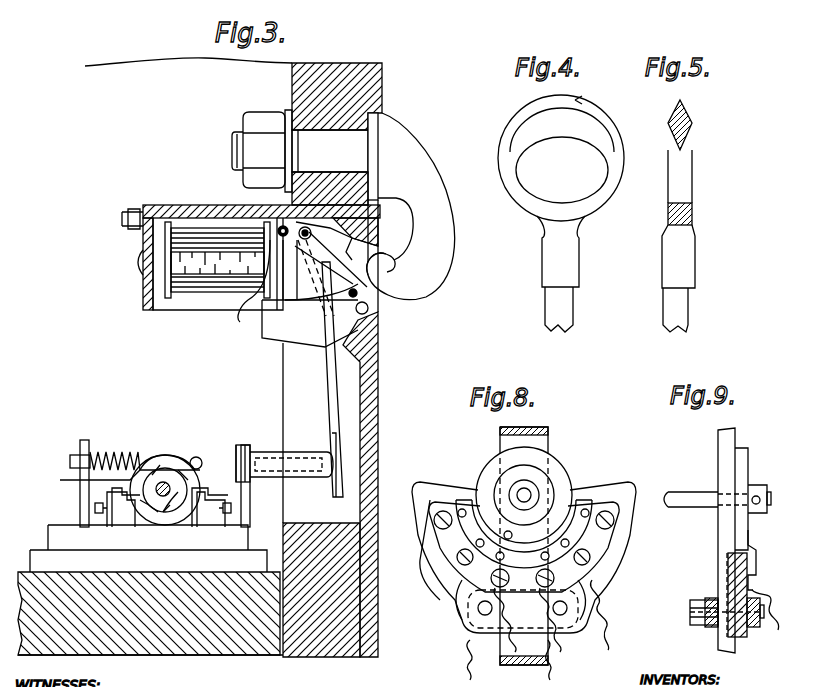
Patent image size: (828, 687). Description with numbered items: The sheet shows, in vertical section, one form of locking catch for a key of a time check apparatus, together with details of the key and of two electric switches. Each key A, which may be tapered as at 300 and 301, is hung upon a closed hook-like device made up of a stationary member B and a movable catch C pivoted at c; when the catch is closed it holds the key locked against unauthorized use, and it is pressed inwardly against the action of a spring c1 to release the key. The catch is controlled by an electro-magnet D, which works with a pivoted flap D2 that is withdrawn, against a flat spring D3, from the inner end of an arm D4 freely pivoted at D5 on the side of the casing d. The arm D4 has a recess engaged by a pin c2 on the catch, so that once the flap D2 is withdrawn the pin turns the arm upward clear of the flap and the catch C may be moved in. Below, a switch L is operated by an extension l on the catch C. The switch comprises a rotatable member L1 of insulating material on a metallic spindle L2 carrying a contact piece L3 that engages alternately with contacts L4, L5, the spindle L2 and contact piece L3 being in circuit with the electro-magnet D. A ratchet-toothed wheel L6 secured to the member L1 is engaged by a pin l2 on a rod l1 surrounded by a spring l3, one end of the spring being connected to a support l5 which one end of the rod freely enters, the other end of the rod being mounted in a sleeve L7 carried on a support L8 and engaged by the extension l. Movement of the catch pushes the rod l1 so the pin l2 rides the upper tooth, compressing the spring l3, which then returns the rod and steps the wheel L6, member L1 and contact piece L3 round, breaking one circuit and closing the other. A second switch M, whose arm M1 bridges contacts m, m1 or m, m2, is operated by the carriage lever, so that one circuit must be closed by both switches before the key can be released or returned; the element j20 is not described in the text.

In FIG. 3, the electro-magnet D is at (177, 222).
In FIG. 3, the pivot of the catch c is at (283, 210).
In FIG. 3, the spring c1 is at (313, 257).
In FIG. 3, the stationary member B is at (417, 206).
In FIG. 3, the pivot of the arm D5 is at (366, 276).
In FIG. 3, the movable catch C is at (372, 298).
In FIG. 3, the pin c2 is at (362, 316).
In FIG. 3, the arm D4 is at (316, 318).
In FIG. 3, the flat spring D3 is at (285, 296).
In FIG. 3, the pivoted flap D2 is at (280, 318).
In FIG. 3, the casing d is at (290, 336).
In FIG. 3, the extension l is at (335, 404).
In FIG. 3, the switch L is at (165, 472).
In FIG. 3, the rotatable member L1 is at (138, 503).
In FIG. 3, the metallic spindle L2 is at (163, 484).
In FIG. 3, the contact piece L3 is at (170, 508).
In FIG. 3, the contact L4 is at (121, 482).
In FIG. 3, the contact L5 is at (222, 488).
In FIG. 3, the ratchet-toothed wheel L6 is at (213, 470).
In FIG. 3, the sleeve L7 is at (297, 452).
In FIG. 3, the support L8 is at (247, 447).
In FIG. 3, the rod l1 is at (198, 490).
In FIG. 3, the pin l2 is at (193, 458).
In FIG. 3, the spring l3 is at (104, 452).
In FIG. 3, the support l5 is at (86, 444).
In FIG. 4, the key A is at (561, 213).
In FIG. 5, the key A is at (685, 241).
In FIG. 4, the taper of the key 300 is at (578, 100).
In FIG. 5, the taper of the key 301 is at (688, 103).
In FIG. 8, the switch M is at (535, 546).
In FIG. 9, the switch M is at (733, 540).
In FIG. 8, the arm M1 is at (485, 517).
In FIG. 9, the arm M1 is at (758, 564).
In FIG. 8, the contact m is at (577, 603).
In FIG. 8, the contact m1 is at (443, 530).
In FIG. 8, the contact m2 is at (460, 583).
In FIG. 9, the rod j20 is at (677, 502).